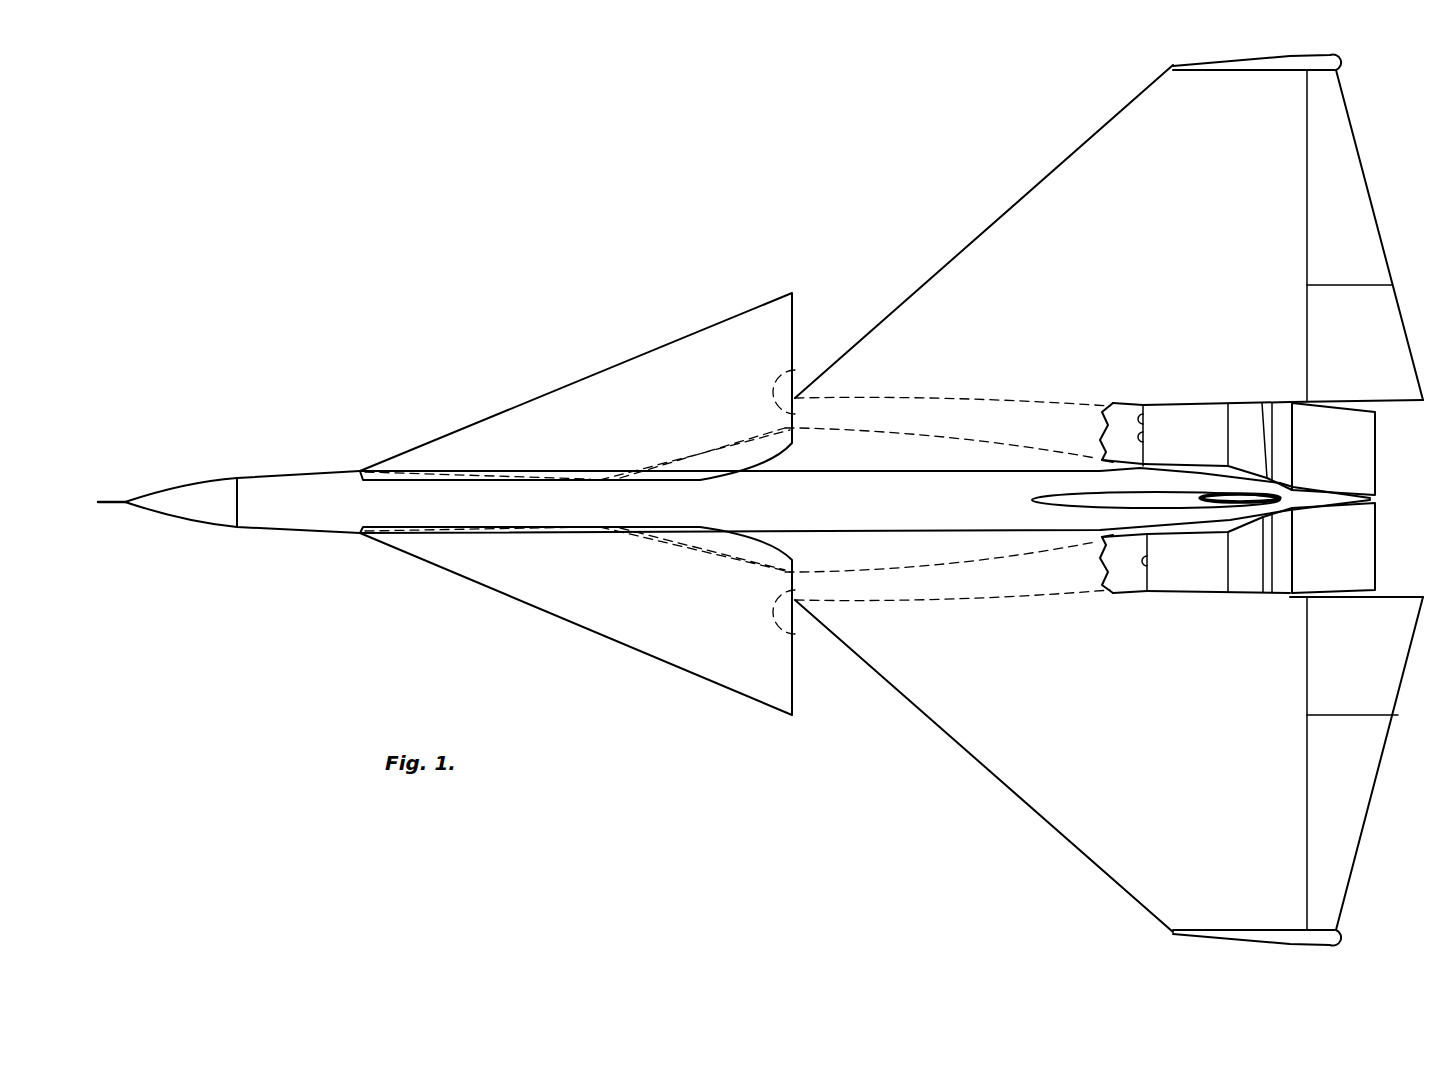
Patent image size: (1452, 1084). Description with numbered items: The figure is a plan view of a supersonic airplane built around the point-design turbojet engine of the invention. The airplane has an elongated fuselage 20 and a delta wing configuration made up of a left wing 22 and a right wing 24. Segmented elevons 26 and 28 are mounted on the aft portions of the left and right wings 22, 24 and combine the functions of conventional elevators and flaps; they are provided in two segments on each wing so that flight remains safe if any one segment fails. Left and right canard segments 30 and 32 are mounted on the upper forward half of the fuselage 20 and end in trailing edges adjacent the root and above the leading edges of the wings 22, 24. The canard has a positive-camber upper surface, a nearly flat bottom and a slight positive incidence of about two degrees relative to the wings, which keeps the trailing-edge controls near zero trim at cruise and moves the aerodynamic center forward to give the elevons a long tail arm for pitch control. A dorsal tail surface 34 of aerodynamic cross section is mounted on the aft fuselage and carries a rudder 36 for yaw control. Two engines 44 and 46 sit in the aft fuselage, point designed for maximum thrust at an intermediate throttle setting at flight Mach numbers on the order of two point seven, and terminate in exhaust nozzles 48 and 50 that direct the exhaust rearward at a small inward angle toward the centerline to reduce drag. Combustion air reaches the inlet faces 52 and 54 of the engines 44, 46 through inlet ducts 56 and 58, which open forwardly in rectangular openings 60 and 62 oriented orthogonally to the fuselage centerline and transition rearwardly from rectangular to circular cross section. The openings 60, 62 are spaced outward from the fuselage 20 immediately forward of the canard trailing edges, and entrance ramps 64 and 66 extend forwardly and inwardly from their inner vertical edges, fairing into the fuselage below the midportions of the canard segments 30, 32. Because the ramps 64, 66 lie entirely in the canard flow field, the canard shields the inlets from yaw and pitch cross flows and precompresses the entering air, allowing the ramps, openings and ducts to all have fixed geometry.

The fuselage 20 is at (300, 536).
The left wing 22 is at (1012, 768).
The right wing 24 is at (1030, 215).
The segmented elevon 26 is at (1392, 700).
The segmented elevon 28 is at (1390, 293).
The left canard segment 30 is at (532, 593).
The right canard segment 32 is at (535, 408).
The dorsal tail surface 34 is at (1090, 494).
The rudder 36 is at (1242, 494).
The engine 44 is at (1205, 570).
The engine 46 is at (1195, 422).
The exhaust nozzle 48 is at (1367, 551).
The exhaust nozzle 50 is at (1365, 455).
The inlet face 52 is at (1143, 573).
The inlet face 54 is at (1143, 425).
The inlet duct 56 is at (988, 592).
The inlet duct 58 is at (992, 408).
The rectangular opening 60 is at (797, 637).
The rectangular opening 62 is at (806, 368).
The entrance ramp 64 is at (710, 556).
The entrance ramp 66 is at (703, 452).